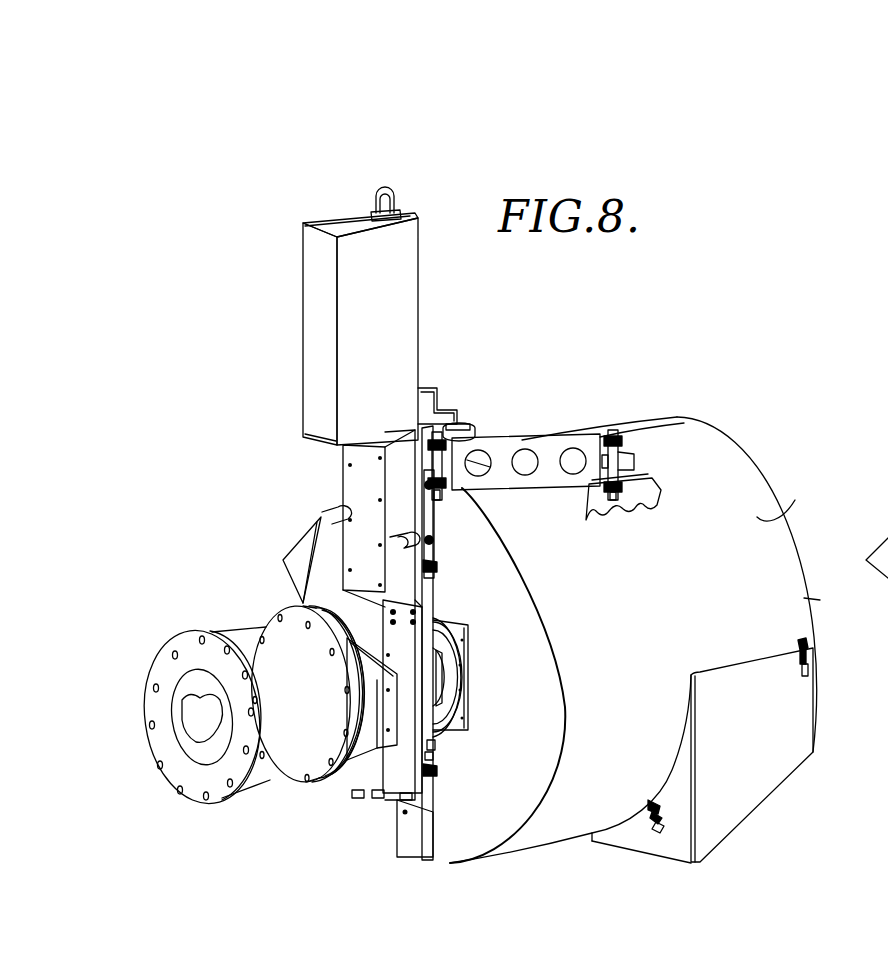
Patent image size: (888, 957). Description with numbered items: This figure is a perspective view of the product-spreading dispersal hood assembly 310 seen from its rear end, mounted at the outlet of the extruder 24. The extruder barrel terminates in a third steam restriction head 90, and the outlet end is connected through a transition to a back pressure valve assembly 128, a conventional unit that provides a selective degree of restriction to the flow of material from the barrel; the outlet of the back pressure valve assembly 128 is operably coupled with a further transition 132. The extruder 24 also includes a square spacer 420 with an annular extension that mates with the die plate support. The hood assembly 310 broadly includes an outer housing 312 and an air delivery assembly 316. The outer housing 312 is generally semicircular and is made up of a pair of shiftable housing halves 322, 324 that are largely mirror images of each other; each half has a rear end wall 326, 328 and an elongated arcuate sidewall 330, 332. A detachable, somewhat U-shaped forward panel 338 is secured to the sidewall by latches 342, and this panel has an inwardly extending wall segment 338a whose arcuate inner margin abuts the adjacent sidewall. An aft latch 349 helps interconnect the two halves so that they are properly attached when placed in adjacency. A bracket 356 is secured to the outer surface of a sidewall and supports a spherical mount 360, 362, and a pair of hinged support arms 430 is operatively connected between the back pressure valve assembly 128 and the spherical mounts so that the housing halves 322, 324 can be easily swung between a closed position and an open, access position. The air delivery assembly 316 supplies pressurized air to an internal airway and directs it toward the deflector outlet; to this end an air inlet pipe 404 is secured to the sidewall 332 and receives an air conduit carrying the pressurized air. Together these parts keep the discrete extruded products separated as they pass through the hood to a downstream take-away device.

The back pressure valve assembly 128 is at (428, 300).
The product-spreading dispersal hood assembly 310 is at (648, 341).
The housing half 324 is at (621, 418).
The outer housing 312 is at (763, 426).
The arcuate sidewall 330 is at (778, 496).
The housing half 322 is at (811, 600).
The spherical mount 362 is at (472, 426).
The hinged support arm 430 is at (522, 440).
The spherical mount 360 is at (626, 464).
The bracket 356 is at (645, 512).
The air delivery assembly 316 is at (296, 538).
The extruder 24 is at (193, 609).
The air inlet pipe 404 is at (293, 567).
The aft latch 349 is at (437, 566).
The square spacer 420 is at (470, 656).
The transition 132 is at (450, 704).
The rear end wall 326 is at (530, 730).
The third steam restriction head 90 is at (272, 770).
The arcuate sidewall 332 is at (362, 806).
The rear end wall 328 is at (393, 815).
The forward panel 338 is at (772, 770).
The inwardly extending wall segment 338a is at (650, 843).
The latch 342 is at (800, 670).